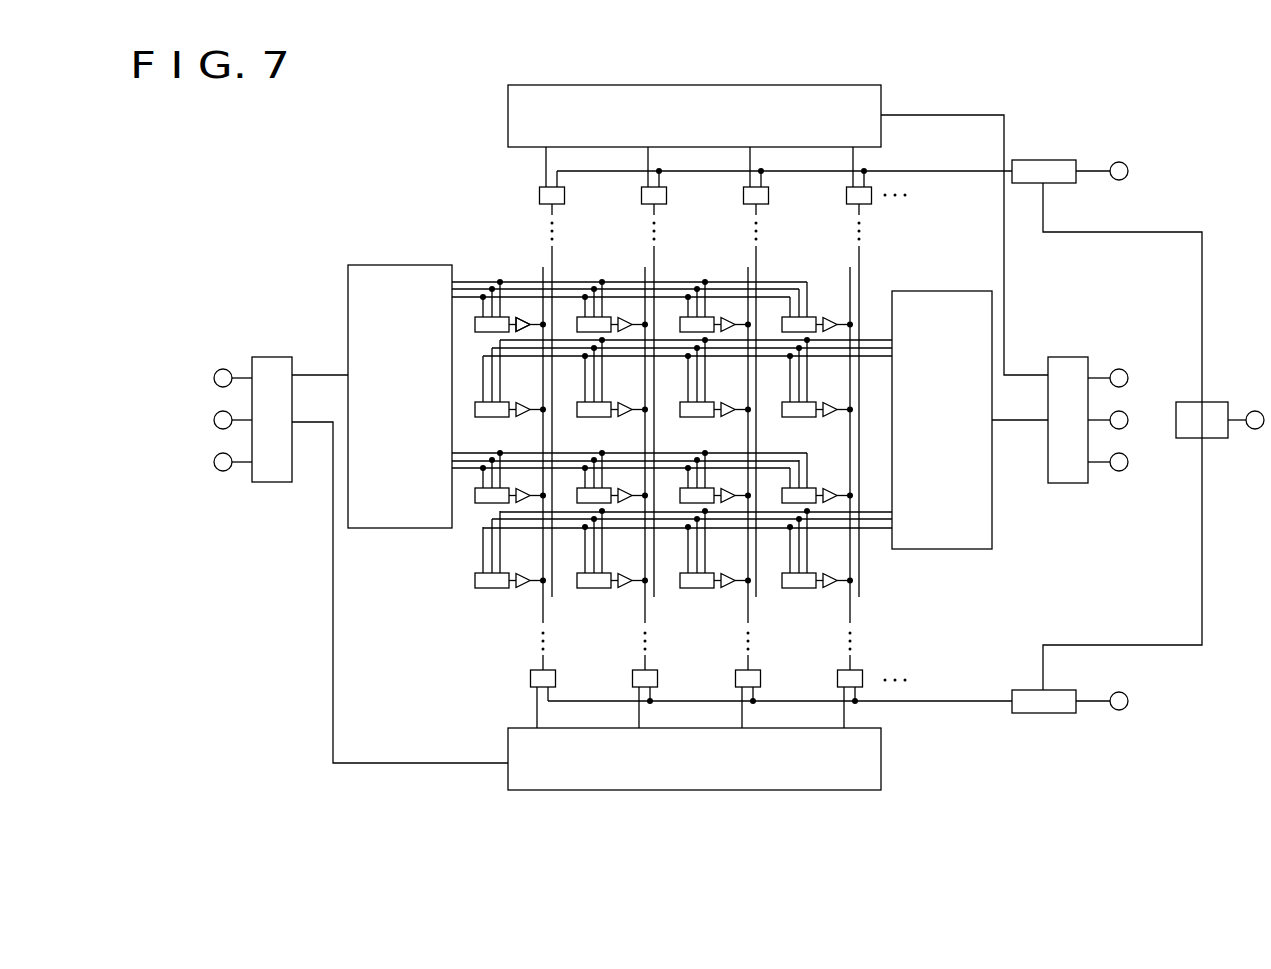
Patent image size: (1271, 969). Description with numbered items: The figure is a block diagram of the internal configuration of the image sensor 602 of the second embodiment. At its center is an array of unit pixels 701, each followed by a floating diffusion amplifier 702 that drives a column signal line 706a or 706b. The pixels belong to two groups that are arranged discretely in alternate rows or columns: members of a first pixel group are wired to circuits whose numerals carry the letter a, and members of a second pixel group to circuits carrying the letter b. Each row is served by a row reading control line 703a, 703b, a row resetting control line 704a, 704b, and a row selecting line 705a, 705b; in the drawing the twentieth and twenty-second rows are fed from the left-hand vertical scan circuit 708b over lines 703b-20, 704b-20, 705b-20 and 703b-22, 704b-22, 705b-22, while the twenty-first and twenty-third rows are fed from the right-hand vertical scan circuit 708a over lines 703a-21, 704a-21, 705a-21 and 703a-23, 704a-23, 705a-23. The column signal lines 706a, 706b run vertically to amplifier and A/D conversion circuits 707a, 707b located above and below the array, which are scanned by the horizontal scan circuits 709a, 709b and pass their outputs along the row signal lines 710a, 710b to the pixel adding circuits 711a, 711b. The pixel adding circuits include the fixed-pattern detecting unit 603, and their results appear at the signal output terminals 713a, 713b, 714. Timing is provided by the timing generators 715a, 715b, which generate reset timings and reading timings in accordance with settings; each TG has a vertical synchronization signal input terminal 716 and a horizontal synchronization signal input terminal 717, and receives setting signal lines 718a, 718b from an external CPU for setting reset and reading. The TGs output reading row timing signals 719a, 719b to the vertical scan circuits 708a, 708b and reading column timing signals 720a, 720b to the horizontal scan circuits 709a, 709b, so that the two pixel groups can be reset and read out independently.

The image sensor 602 is at (1186, 151).
The fixed-pattern detecting unit 603 is at (1224, 401).
The unit pixel 701 is at (468, 316).
The floating diffusion amplifier 702 is at (526, 319).
The row reading control line 703a is at (772, 362).
The row reading control line 703b is at (583, 281).
The row resetting control line 704a is at (872, 347).
The row resetting control line 704b is at (688, 290).
The row selecting line 705a is at (885, 340).
The row selecting line 705b is at (786, 297).
The row reading control line 703a-21 is at (892, 340).
The row resetting control line 704a-21 is at (892, 348).
The row selecting line 705a-21 is at (892, 356).
The row reading control line 703a-23 is at (892, 512).
The row resetting control line 704a-23 is at (892, 519).
The row selecting line 705a-23 is at (892, 528).
The row reading control line 703b-20 is at (452, 282).
The row resetting control line 704b-20 is at (452, 289).
The row selecting line 705b-20 is at (452, 297).
The row reading control line 703b-22 is at (452, 453).
The row resetting control line 704b-22 is at (452, 461).
The row selecting line 705b-22 is at (452, 468).
The column signal line 706a is at (655, 582).
The column signal line 706b is at (543, 608).
The amplifier and A/D conversion circuit 707a is at (539, 196).
The amplifier and A/D conversion circuit 707b is at (530, 678).
The vertical scan circuit 708a is at (940, 549).
The vertical scan circuit 708b is at (415, 265).
The horizontal scan circuit 709a is at (508, 124).
The horizontal scan circuit 709b is at (881, 764).
The row signal line 710a is at (700, 174).
The row signal line 710b is at (695, 700).
The pixel adding circuit 711a is at (1050, 160).
The pixel adding circuit 711b is at (1050, 713).
The signal output terminal 713a is at (1128, 171).
The signal output terminal 713b is at (1128, 701).
The signal output terminal 714 is at (1252, 429).
The timing generator 715a is at (1090, 357).
The timing generator 715b is at (252, 357).
The vertical synchronization signal input terminal 716 is at (214, 379).
The horizontal synchronization signal input terminal 717 is at (214, 421).
The setting signal line 718a is at (1128, 464).
The setting signal line 718b is at (214, 463).
The reading row timing signal 719a is at (1020, 423).
The reading row timing signal 719b is at (320, 374).
The reading column timing signal 720a is at (1020, 377).
The reading column timing signal 720b is at (320, 421).